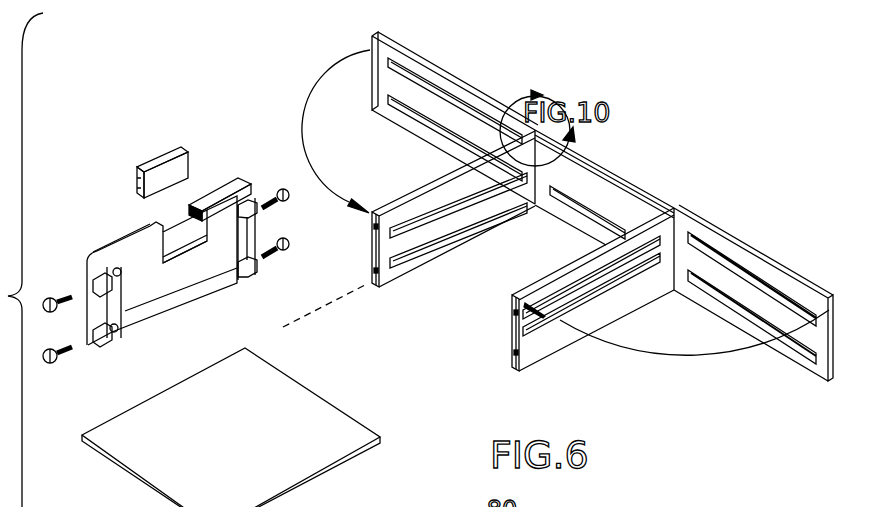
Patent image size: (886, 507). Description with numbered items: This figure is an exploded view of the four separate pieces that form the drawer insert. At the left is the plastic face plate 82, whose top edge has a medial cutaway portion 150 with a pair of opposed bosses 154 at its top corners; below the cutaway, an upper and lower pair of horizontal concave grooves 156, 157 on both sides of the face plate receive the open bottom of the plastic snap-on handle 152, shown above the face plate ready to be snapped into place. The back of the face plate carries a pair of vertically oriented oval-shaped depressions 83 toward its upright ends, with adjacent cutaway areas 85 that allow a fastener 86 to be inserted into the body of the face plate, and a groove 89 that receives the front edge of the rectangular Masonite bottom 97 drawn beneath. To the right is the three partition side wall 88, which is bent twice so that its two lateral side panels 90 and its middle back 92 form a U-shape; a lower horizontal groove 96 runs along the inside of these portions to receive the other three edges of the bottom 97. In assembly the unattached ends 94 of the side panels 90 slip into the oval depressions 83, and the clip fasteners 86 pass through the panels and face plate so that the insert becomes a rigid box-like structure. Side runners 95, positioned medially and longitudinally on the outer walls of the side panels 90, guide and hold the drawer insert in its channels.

The face plate 82 is at (167, 300).
The oval-shaped depressions 83 is at (248, 243).
The cutaway areas 85 is at (258, 203).
The fastener 86 is at (168, 276).
The three partition side wall 88 is at (622, 140).
The groove 89 is at (171, 256).
The side panels 90 is at (423, 107).
The back 92 is at (601, 207).
The unattached ends 94 is at (367, 250).
The side runners 95 is at (558, 308).
The lower horizontal groove 96 is at (447, 235).
The bottom 97 is at (217, 437).
The cutaway portion 150 is at (178, 200).
The snap-on handle 152 is at (173, 132).
The bosses 154 is at (190, 212).
The upper horizontal concave groove 156 is at (190, 243).
The lower horizontal concave groove 157 is at (176, 262).